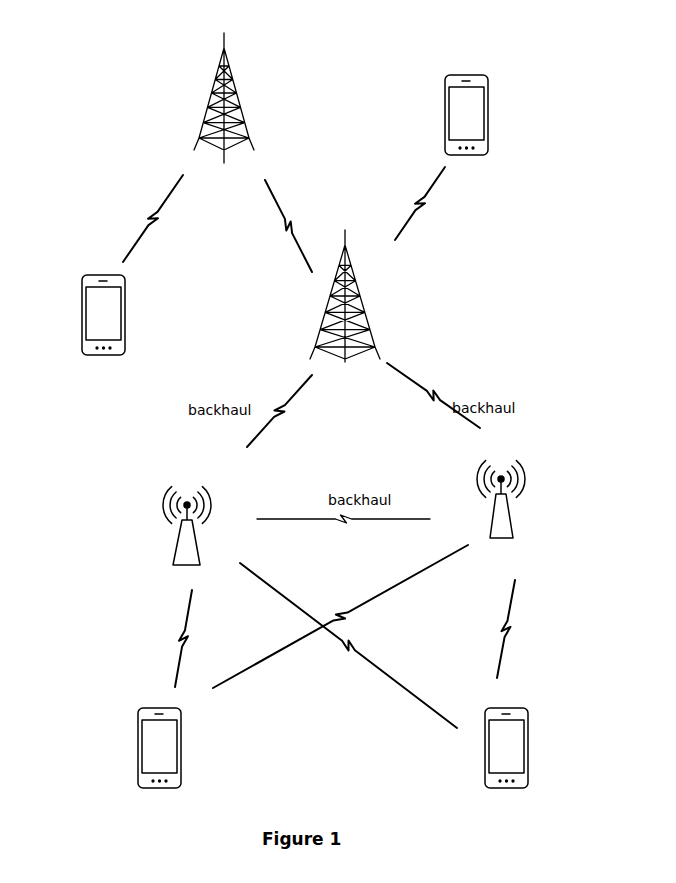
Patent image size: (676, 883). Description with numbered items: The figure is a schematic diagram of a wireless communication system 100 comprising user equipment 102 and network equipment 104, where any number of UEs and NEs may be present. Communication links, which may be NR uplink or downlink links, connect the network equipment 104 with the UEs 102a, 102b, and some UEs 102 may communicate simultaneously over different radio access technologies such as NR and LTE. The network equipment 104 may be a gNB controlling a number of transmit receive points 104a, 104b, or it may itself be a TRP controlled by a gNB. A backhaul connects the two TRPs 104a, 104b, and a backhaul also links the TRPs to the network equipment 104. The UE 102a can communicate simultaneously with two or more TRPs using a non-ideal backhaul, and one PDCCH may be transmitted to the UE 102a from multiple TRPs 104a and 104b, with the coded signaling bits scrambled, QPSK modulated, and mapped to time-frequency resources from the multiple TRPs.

The wireless communication system 100 is at (110, 57).
The user equipment 102 is at (283, 215).
The user equipment 102a is at (133, 748).
The user equipment 102b is at (531, 748).
The network equipment 104 is at (210, 101).
The transmit receive point 104a is at (159, 526).
The transmit receive point 104b is at (528, 499).